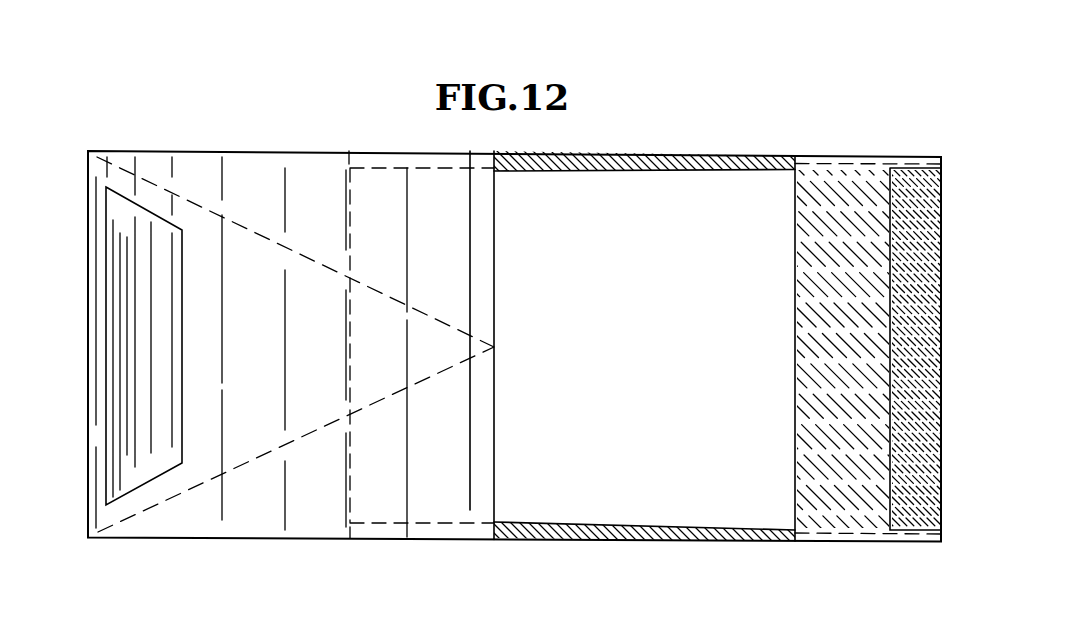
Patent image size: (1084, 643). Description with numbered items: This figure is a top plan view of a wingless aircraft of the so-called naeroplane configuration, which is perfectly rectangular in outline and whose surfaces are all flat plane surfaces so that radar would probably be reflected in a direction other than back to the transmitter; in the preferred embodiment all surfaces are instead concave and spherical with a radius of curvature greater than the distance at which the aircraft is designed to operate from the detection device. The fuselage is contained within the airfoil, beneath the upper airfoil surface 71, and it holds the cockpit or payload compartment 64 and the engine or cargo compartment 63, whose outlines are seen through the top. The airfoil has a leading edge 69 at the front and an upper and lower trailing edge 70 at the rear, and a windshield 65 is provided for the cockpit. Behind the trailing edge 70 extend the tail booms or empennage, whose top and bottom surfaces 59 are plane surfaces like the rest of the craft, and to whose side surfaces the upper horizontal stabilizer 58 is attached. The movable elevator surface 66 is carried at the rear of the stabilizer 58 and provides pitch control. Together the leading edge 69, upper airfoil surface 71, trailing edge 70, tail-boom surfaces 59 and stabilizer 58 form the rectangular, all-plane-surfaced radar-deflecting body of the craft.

The upper horizontal stabilizer 58 is at (818, 345).
The top and bottom surfaces of the tail booms 59 is at (728, 163).
The engine or cargo compartment 63 is at (460, 347).
The cockpit or payload compartment 64 is at (235, 445).
The windshield 65 is at (123, 220).
The movable elevator surface 66 is at (915, 187).
The leading edge 69 is at (88, 192).
The upper and lower trailing edge 70 is at (495, 246).
The upper airfoil surface 71 is at (262, 177).